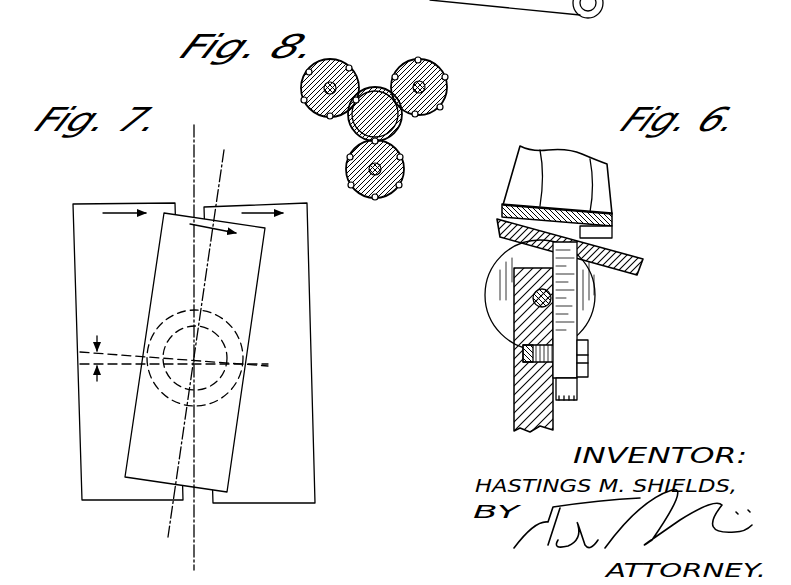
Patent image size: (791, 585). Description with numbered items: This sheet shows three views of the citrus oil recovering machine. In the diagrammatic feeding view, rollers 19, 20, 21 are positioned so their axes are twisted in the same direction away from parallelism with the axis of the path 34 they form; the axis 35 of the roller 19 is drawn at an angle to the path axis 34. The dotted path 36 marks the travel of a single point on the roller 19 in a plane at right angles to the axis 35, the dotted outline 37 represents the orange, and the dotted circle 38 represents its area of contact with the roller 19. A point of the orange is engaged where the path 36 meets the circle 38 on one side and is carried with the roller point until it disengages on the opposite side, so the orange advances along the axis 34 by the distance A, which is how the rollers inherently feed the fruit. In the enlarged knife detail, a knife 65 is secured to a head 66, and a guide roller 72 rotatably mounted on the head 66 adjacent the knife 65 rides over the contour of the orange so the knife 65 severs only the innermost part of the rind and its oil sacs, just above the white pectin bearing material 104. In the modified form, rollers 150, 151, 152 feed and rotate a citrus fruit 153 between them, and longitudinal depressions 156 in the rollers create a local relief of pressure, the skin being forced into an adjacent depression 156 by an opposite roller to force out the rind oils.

In FIG. 7, the roller 19 is at (245, 267).
In FIG. 7, the roller 20 is at (293, 270).
In FIG. 7, the roller 21 is at (92, 294).
In FIG. 7, the axis of the path 34 is at (194, 163).
In FIG. 7, the axis of the roller 35 is at (223, 180).
In FIG. 7, the path of a point on the roller 36 is at (248, 362).
In FIG. 7, the outline of an orange 37 is at (233, 332).
In FIG. 7, the area of contact 38 is at (222, 386).
In FIG. 7, the distance of forward travel A is at (92, 358).
In FIG. 8, the roller 150 is at (342, 68).
In FIG. 8, the roller 151 is at (453, 83).
In FIG. 8, the roller 152 is at (404, 167).
In FIG. 8, the citrus fruit 153 is at (402, 130).
In FIG. 8, the longitudinal depressions 156 is at (418, 59).
In FIG. 6, the pectin bearing material 104 is at (608, 212).
In FIG. 6, the knife 65 is at (565, 285).
In FIG. 6, the head 66 is at (542, 328).
In FIG. 6, the guide roller 72 is at (592, 302).